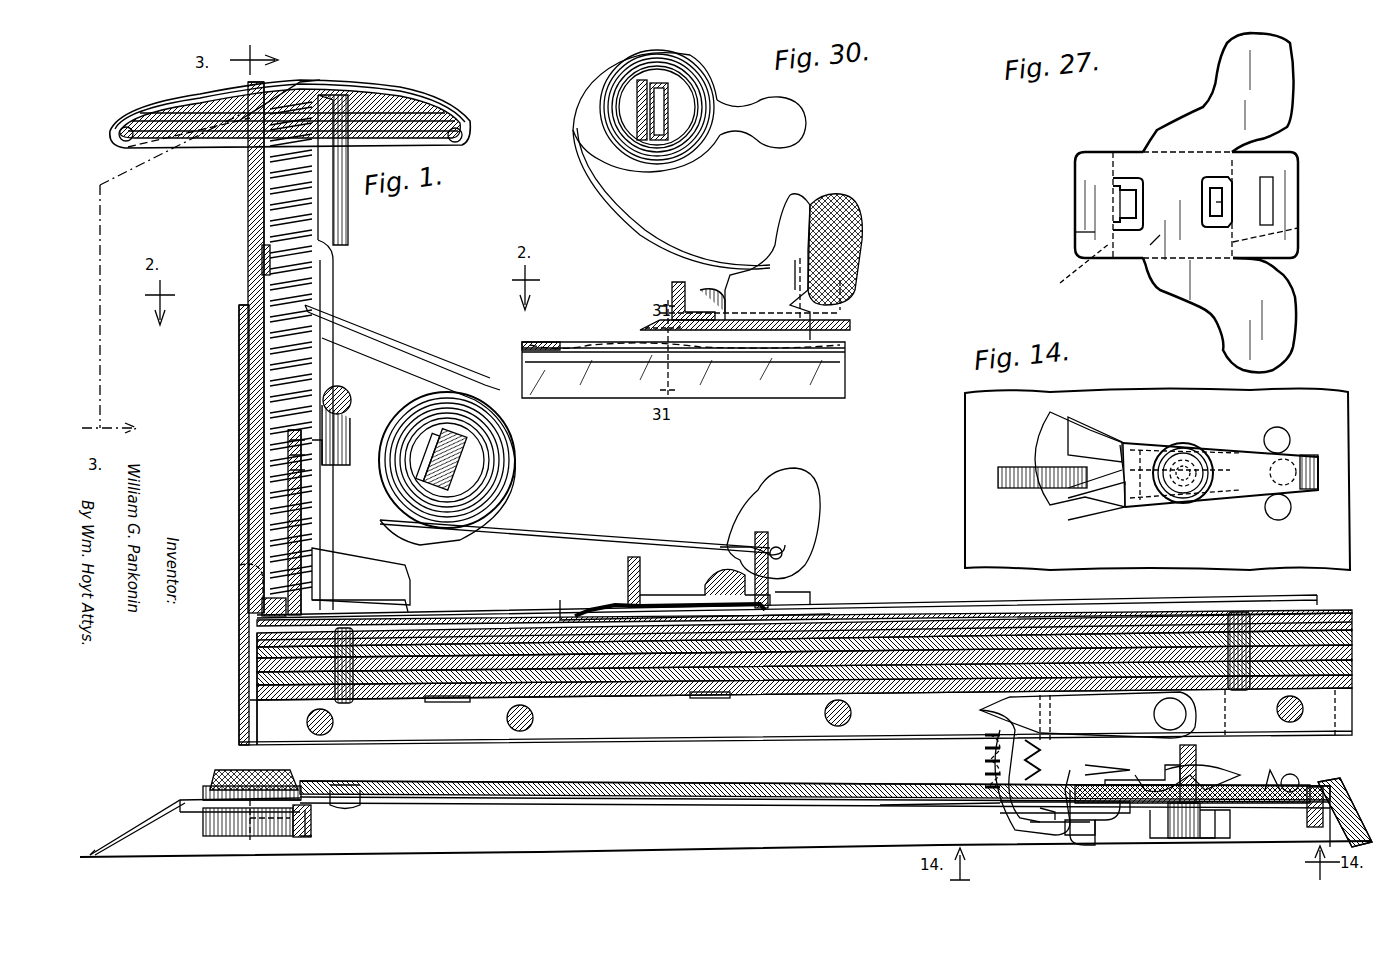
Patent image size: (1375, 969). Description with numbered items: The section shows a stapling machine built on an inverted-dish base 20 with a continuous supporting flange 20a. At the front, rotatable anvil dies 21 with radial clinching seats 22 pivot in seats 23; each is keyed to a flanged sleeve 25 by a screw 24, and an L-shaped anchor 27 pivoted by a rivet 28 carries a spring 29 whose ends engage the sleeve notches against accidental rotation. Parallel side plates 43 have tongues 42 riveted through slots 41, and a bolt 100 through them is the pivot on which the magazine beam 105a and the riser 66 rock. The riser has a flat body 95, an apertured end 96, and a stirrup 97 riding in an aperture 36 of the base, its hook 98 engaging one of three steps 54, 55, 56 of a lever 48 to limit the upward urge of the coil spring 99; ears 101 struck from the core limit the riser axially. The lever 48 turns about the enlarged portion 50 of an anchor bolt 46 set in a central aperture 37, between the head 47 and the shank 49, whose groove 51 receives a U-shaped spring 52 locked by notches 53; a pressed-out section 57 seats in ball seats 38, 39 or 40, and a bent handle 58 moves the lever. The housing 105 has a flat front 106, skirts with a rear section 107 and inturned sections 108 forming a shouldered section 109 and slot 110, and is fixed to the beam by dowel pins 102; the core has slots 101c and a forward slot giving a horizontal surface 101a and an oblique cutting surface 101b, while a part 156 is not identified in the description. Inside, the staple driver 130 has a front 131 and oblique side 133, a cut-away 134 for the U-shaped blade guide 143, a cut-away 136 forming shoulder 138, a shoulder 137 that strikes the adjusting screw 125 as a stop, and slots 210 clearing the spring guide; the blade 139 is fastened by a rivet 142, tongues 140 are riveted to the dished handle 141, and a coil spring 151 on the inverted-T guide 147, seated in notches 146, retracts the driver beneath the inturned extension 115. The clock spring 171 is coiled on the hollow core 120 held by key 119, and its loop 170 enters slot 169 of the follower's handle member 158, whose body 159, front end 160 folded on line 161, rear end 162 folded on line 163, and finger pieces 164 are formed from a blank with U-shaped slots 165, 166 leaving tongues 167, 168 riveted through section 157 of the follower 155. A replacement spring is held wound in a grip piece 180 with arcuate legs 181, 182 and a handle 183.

In FIG. 1, the handle 141 is at (430, 100).
In FIG. 1, the projecting tongues 140 is at (300, 80).
In FIG. 1, the staple driver blade 139 is at (262, 150).
In FIG. 1, the staple driver plunger 130 is at (240, 186).
In FIG. 1, the front of the driver 131 is at (255, 205).
In FIG. 1, the rivet 142 is at (262, 262).
In FIG. 1, the obliquely disposed section 133 is at (338, 235).
In FIG. 1, the transverse shoulder 138 is at (333, 262).
In FIG. 1, the cut away section 136 is at (330, 278).
In FIG. 1, the cut-away section 134 is at (265, 462).
In FIG. 1, the housing 105 is at (226, 401).
In FIG. 1, the front of the housing 106 is at (240, 365).
In FIG. 1, the coil spring 151 is at (415, 345).
In FIG. 1, the extension 115 is at (370, 325).
In FIG. 1, the adjusting screw 125 is at (350, 400).
In FIG. 1, the transverse shoulder 137 is at (350, 425).
In FIG. 1, the slots 210 is at (330, 440).
In FIG. 1, the spring core 120 is at (460, 442).
In FIG. 1, the key 119 is at (462, 470).
In FIG. 30, the key 119 is at (652, 110).
In FIG. 1, the spring guide 147 is at (301, 480).
In FIG. 1, the slot 110 is at (305, 540).
In FIG. 1, the shouldered section 109 is at (320, 580).
In FIG. 1, the skirt section 108 is at (405, 585).
In FIG. 1, the staple driver guide 143 is at (235, 565).
In FIG. 1, the opposed notches 146 is at (300, 608).
In FIG. 1, the top plate 156 is at (495, 612).
In FIG. 30, the top plate 156 is at (555, 345).
In FIG. 1, the magazine beam 105a is at (404, 717).
In FIG. 1, the rear skirt section 107 is at (520, 590).
In FIG. 1, the dowel pins 102 is at (335, 720).
In FIG. 1, the horizontal surface 101a is at (275, 705).
In FIG. 1, the oblique surface 101b is at (252, 705).
In FIG. 1, the slots 101c is at (615, 712).
In FIG. 1, the ears 101 is at (1250, 690).
In FIG. 1, the bolt 100 is at (1276, 712).
In FIG. 1, the riser 66 is at (1040, 710).
In FIG. 1, the flat body 95 is at (1060, 710).
In FIG. 1, the apertured end 96 is at (1152, 710).
In FIG. 1, the coil spring 99 is at (980, 748).
In FIG. 1, the slots 41 is at (1270, 800).
In FIG. 1, the aperture 36 is at (1045, 775).
In FIG. 1, the U-shaped spring 52 is at (1107, 756).
In FIG. 14, the U-shaped spring 52 is at (1120, 500).
In FIG. 1, the groove 51 is at (1150, 780).
In FIG. 1, the shank 49 is at (1245, 755).
In FIG. 1, the pressed-out section 57 is at (1275, 790).
In FIG. 1, the ball seat 39 is at (1295, 776).
In FIG. 14, the ball seat 39 is at (1290, 462).
In FIG. 1, the base 20 is at (700, 783).
In FIG. 1, the supporting flange 20a is at (100, 857).
In FIG. 1, the side plate members 43 is at (940, 781).
In FIG. 1, the clinching seat 22 is at (250, 770).
In FIG. 1, the anvil die 21 is at (200, 790).
In FIG. 1, the seat 23 is at (290, 782).
In FIG. 1, the flanged sleeve 25 is at (205, 830).
In FIG. 1, the L-shaped anchor 27 is at (311, 825).
In FIG. 1, the rivet 28 is at (355, 810).
In FIG. 1, the screw 24 is at (250, 840).
In FIG. 1, the spring 29 is at (305, 836).
In FIG. 1, the tongues 42 is at (1005, 810).
In FIG. 1, the step 55 is at (1045, 815).
In FIG. 14, the step 55 is at (1068, 488).
In FIG. 1, the step 54 is at (1050, 826).
In FIG. 14, the step 54 is at (1068, 430).
In FIG. 1, the step 56 is at (1100, 825).
In FIG. 14, the step 56 is at (1080, 512).
In FIG. 1, the aperture 37 is at (1140, 818).
In FIG. 1, the stirrup 97 is at (1080, 835).
In FIG. 14, the stirrup 97 is at (1040, 472).
In FIG. 1, the hook 98 is at (1100, 828).
In FIG. 1, the head 47 is at (1160, 835).
In FIG. 1, the enlarged portion 50 is at (1175, 820).
In FIG. 1, the anchor bolt 46 is at (1188, 810).
In FIG. 14, the anchor bolt 46 is at (1175, 450).
In FIG. 1, the lever 48 is at (1230, 830).
In FIG. 14, the lever 48 is at (1130, 450).
In FIG. 1, the handle 58 is at (1300, 838).
In FIG. 14, the handle 58 is at (1310, 490).
In FIG. 1, the follower 155 is at (805, 590).
In FIG. 30, the follower 155 is at (830, 360).
In FIG. 1, the tongue 167 is at (610, 600).
In FIG. 30, the tongue 167 is at (630, 318).
In FIG. 27, the tongue 167 is at (1122, 207).
In FIG. 1, the front end 160 is at (628, 560).
In FIG. 30, the front end 160 is at (672, 290).
In FIG. 27, the front end 160 is at (1078, 235).
In FIG. 1, the central body portion 159 is at (685, 588).
In FIG. 30, the central body portion 159 is at (700, 290).
In FIG. 27, the central body portion 159 is at (1150, 240).
In FIG. 1, the tongue 168 is at (790, 605).
In FIG. 30, the tongue 168 is at (850, 328).
In FIG. 27, the tongue 168 is at (1222, 202).
In FIG. 1, the rear end 162 is at (770, 548).
In FIG. 27, the rear end 162 is at (1290, 165).
In FIG. 1, the handle member 158 is at (815, 480).
In FIG. 30, the handle member 158 is at (898, 256).
In FIG. 27, the handle member 158 is at (1090, 196).
In FIG. 1, the slot 169 is at (772, 555).
In FIG. 27, the slot 169 is at (1232, 178).
In FIG. 1, the loop 170 is at (782, 560).
In FIG. 1, the magazine spring 171 is at (545, 520).
In FIG. 30, the magazine spring 171 is at (690, 235).
In FIG. 30, the arcuate leg 182 is at (680, 170).
In FIG. 30, the arcuate leg 181 is at (690, 55).
In FIG. 30, the grip piece 180 is at (730, 130).
In FIG. 30, the handle 183 is at (790, 123).
In FIG. 30, the side members 164 is at (845, 198).
In FIG. 27, the side members 164 is at (1280, 58).
In FIG. 30, the section 157 is at (795, 372).
In FIG. 27, the U-shaped slot 165 is at (1125, 178).
In FIG. 27, the U-shaped slot 166 is at (1216, 177).
In FIG. 27, the fold line 161 is at (1065, 280).
In FIG. 27, the fold line 163 is at (1298, 228).
In FIG. 14, the complemental notches 53 is at (1188, 462).
In FIG. 14, the ball seat 38 is at (1277, 427).
In FIG. 14, the ball seat 40 is at (1275, 520).